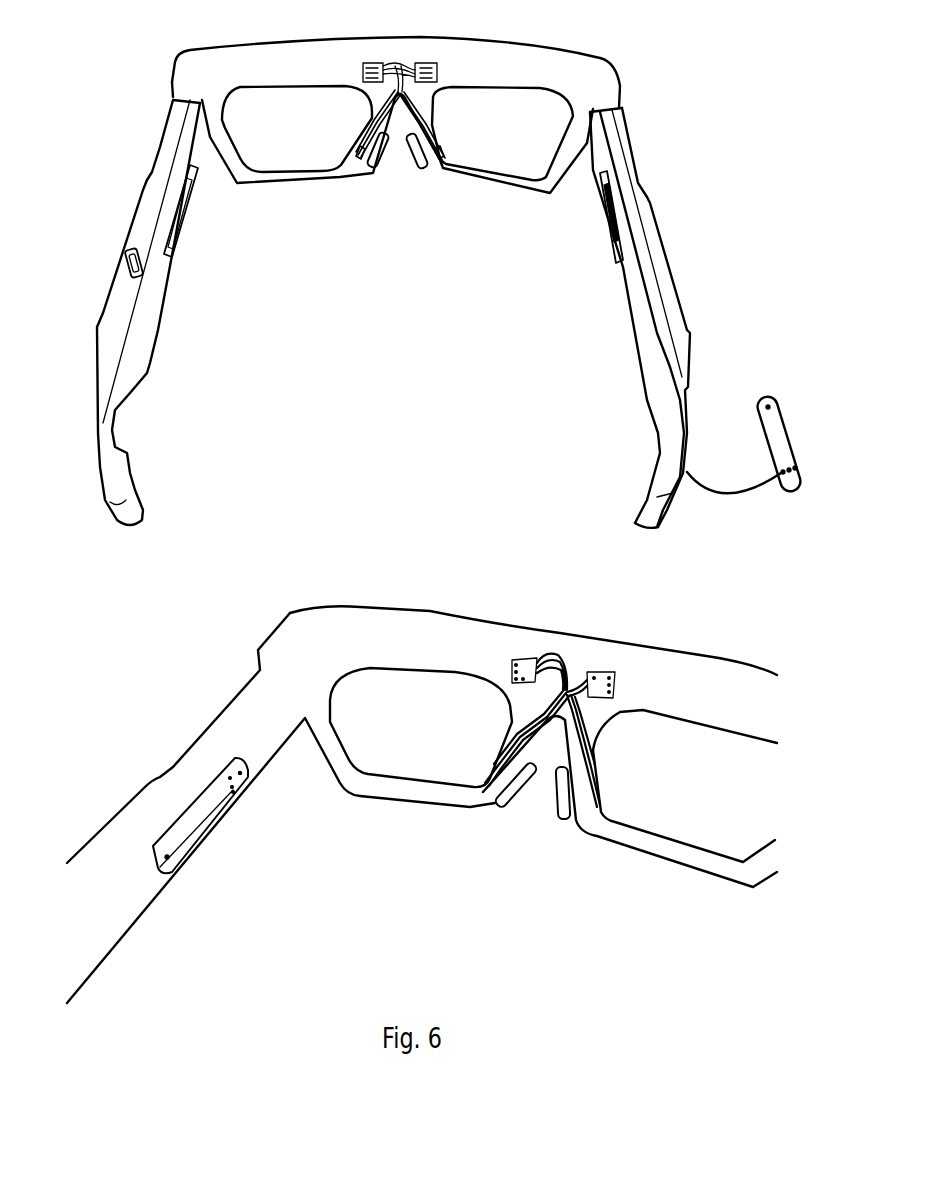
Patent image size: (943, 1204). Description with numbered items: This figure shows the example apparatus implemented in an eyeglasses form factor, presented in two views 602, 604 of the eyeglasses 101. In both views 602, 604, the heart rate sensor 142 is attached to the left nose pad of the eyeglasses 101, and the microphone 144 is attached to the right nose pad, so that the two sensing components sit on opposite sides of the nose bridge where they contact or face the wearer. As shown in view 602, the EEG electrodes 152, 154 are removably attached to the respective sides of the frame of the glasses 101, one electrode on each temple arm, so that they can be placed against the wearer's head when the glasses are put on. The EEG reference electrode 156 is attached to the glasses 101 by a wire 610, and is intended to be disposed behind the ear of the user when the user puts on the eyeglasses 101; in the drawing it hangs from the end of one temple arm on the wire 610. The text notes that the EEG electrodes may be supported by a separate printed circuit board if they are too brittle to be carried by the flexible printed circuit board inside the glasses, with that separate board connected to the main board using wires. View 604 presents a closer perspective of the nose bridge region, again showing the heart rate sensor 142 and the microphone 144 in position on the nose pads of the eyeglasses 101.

The eyeglasses 101 is at (645, 22).
The heart rate sensor 142 is at (377, 173).
The microphone 144 is at (443, 165).
The EEG electrode 152 is at (653, 262).
The EEG electrode 154 is at (123, 297).
The EEG reference electrode 156 is at (779, 433).
The view 602 is at (380, 349).
The view 604 is at (537, 935).
The wire 610 is at (732, 493).